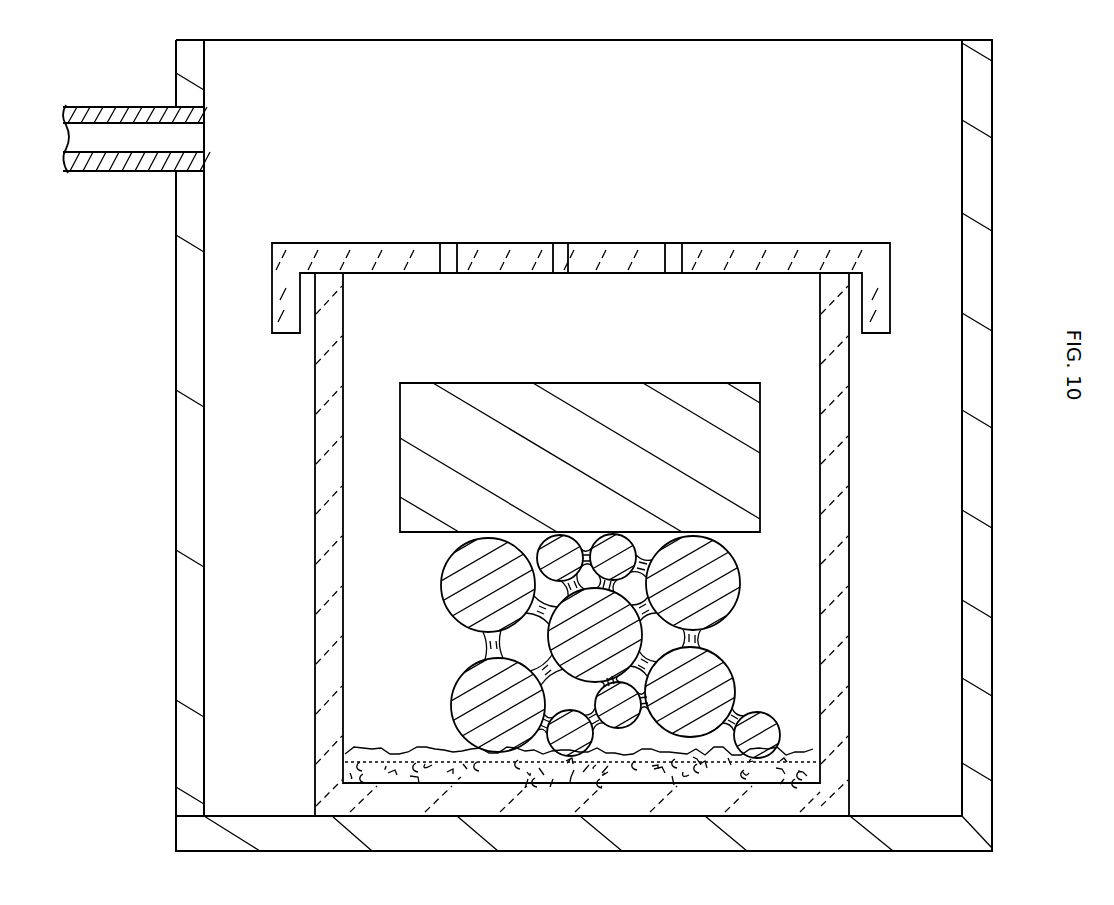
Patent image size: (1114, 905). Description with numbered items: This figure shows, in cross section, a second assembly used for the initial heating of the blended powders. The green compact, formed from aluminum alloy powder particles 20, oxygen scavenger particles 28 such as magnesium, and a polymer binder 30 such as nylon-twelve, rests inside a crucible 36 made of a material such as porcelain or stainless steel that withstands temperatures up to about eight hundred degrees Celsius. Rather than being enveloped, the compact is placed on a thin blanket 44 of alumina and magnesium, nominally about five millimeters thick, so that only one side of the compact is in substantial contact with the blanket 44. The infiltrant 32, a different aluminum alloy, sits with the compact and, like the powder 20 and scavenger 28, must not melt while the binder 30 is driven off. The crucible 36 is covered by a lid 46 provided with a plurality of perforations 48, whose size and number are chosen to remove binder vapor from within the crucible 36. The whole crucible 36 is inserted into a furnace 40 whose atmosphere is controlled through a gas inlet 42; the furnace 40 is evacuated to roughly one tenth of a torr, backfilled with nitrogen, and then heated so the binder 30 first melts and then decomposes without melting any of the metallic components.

The furnace 40 is at (982, 170).
The gas inlet 42 is at (108, 172).
The lid 46 is at (773, 256).
The perforations 48 is at (676, 243).
The crucible 36 is at (849, 540).
The infiltrant 32 is at (760, 455).
The polymer binder 30 is at (708, 635).
The oxygen scavenger particles 28 is at (628, 728).
The aluminum alloy powder particles 20 is at (720, 700).
The blanket 44 is at (808, 773).